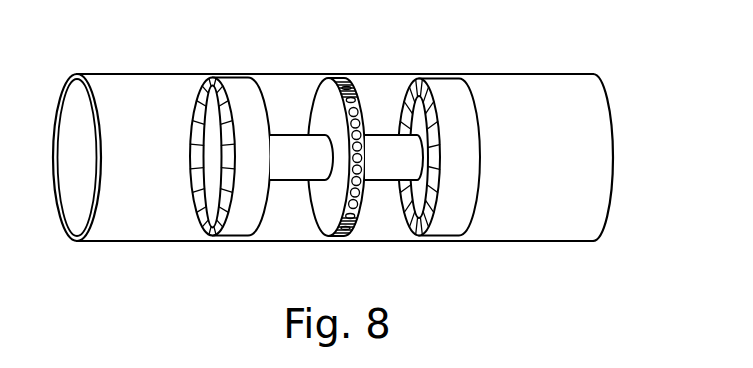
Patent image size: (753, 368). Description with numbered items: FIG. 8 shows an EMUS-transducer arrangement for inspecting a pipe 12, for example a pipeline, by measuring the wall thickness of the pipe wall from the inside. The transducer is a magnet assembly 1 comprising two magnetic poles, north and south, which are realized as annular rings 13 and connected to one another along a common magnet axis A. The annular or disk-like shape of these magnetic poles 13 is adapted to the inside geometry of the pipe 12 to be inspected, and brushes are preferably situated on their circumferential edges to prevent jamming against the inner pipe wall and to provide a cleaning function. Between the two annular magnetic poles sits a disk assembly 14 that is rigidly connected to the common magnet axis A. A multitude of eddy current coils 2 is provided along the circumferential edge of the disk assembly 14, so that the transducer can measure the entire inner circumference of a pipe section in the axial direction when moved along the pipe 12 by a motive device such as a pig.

The magnet assembly 1 is at (344, 155).
The eddy current coil 2 is at (337, 240).
The pipe 12 is at (150, 87).
The magnet ring 13 is at (237, 238).
The disk assembly 14 is at (327, 205).